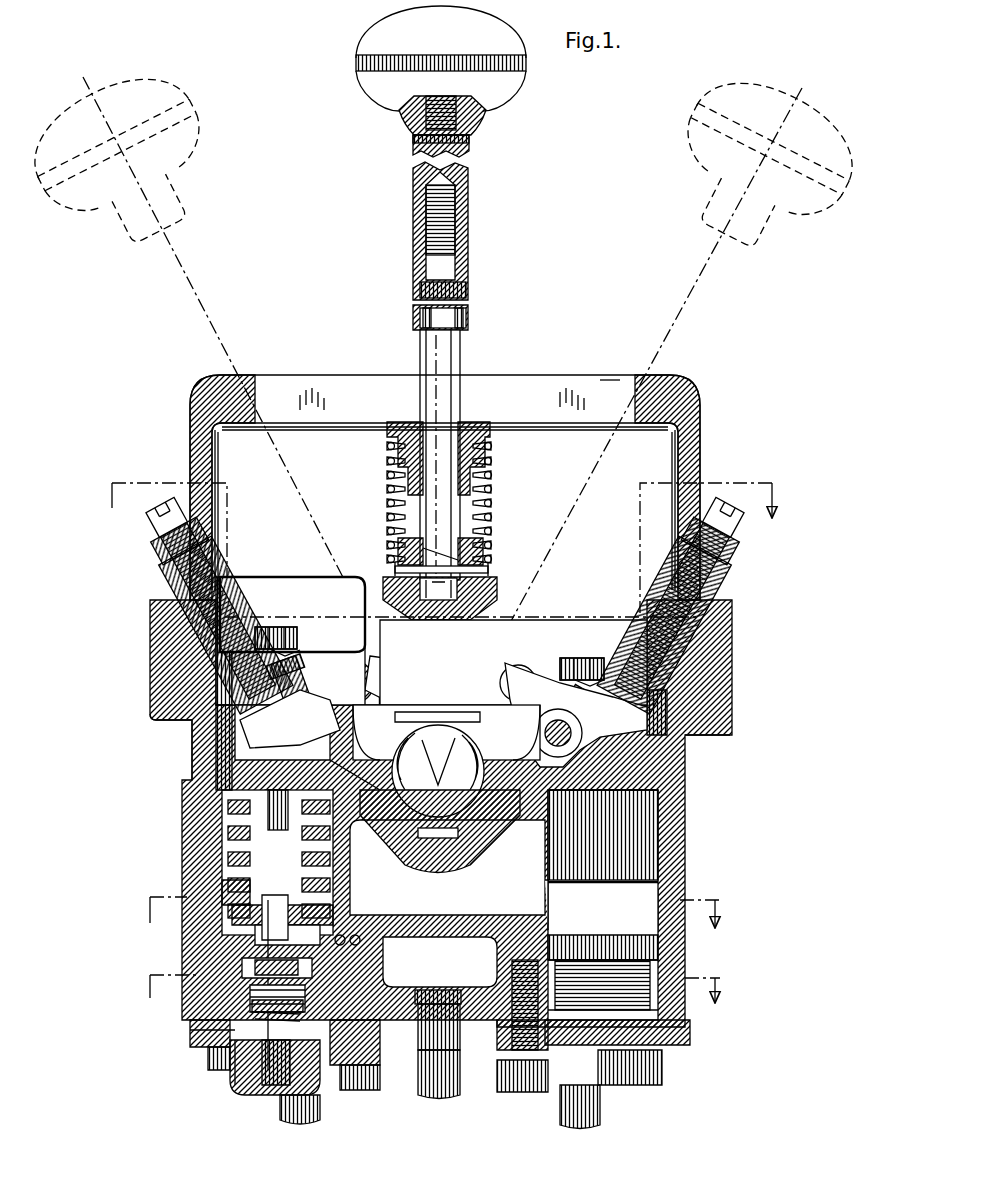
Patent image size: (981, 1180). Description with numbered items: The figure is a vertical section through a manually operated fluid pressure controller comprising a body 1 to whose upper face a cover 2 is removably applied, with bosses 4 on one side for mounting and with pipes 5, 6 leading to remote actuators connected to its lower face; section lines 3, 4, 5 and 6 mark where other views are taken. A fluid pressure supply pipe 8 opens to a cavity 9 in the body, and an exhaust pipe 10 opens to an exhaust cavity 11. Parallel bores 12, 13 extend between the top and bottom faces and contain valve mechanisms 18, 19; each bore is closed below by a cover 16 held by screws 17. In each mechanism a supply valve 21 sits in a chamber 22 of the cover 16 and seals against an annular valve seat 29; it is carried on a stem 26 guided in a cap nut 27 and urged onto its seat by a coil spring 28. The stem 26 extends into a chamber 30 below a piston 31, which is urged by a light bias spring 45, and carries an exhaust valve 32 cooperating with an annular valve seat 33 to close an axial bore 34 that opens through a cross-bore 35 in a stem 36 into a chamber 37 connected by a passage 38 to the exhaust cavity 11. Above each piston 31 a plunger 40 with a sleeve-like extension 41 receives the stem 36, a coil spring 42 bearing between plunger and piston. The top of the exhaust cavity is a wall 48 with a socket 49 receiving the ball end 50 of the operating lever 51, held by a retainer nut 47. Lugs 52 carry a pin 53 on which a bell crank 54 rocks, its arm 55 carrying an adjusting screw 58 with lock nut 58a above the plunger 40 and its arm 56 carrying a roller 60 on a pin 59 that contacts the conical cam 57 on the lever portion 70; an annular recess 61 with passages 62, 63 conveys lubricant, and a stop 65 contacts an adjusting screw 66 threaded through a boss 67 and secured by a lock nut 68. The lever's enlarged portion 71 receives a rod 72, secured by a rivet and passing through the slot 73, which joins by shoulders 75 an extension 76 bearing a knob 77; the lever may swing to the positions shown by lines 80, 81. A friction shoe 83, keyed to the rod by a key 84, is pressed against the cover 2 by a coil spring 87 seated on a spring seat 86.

The body 1 is at (673, 818).
The cover 2 is at (700, 410).
The section line 3 is at (494, 346).
The bosses 4 is at (183, 960).
The pipe 5 is at (278, 1134).
The pipe 6 is at (183, 960).
The fluid pressure supply pipe 8 is at (425, 1063).
The cavity 9 is at (422, 1045).
The exhaust pipe 10 is at (443, 1093).
The exhaust cavity 11 is at (433, 907).
The bore 12 is at (218, 768).
The bore 13 is at (657, 782).
The cover 16 is at (210, 1037).
The screws 17 is at (210, 1057).
The valve mechanism 18 is at (243, 1007).
The valve mechanism 19 is at (653, 993).
The fluid pressure supply valve 21 is at (233, 1083).
The chamber 22 is at (230, 1067).
The stem 26 is at (257, 1093).
The cap nut 27 is at (305, 1117).
The coil spring 28 is at (322, 1073).
The annular valve seat 29 is at (190, 1037).
The chamber 30 is at (194, 990).
The piston 31 is at (228, 933).
The exhaust valve 32 is at (220, 984).
The annular valve seat 33 is at (354, 943).
The axial bore 34 is at (297, 927).
The cross-bore 35 is at (270, 908).
The stem 36 is at (272, 832).
The chamber 37 is at (227, 887).
The passage 38 is at (258, 903).
The plunger 40 is at (220, 818).
The sleeve-like extension 41 is at (270, 832).
The coil spring 42 is at (318, 870).
The bias spring 45 is at (689, 1058).
The retainer nut 47 is at (396, 748).
The wall 48 is at (455, 852).
The socket 49 is at (447, 852).
The ball end 50 is at (432, 856).
The operating lever 51 is at (468, 244).
The lugs 52 is at (398, 712).
The pin 53 is at (438, 762).
The bell crank 54 is at (313, 658).
The arm 55 is at (227, 735).
The arm 56 is at (340, 660).
The cam 57 is at (410, 656).
The adjusting screw 58 is at (278, 627).
The lock nut 58a is at (300, 645).
The pin 59 is at (487, 618).
The roller 60 is at (474, 672).
The annular recess 61 is at (262, 738).
The passage 62 is at (405, 695).
The passage 63 is at (378, 785).
The stop 65 is at (193, 722).
The adjusting screw 66 is at (150, 612).
The boss 67 is at (148, 572).
The lock nut 68 is at (152, 532).
The portion 70 is at (456, 632).
The enlarged portion 71 is at (492, 592).
The rod 72 is at (494, 505).
The slot 73 is at (610, 388).
The shoulders 75 is at (468, 275).
The extension 76 is at (468, 218).
The knob 77 is at (508, 97).
The line 80 is at (708, 272).
The line 81 is at (186, 275).
The friction shoe 83 is at (488, 428).
The key 84 is at (422, 432).
The spring seat 86 is at (492, 530).
The coil spring 87 is at (494, 486).